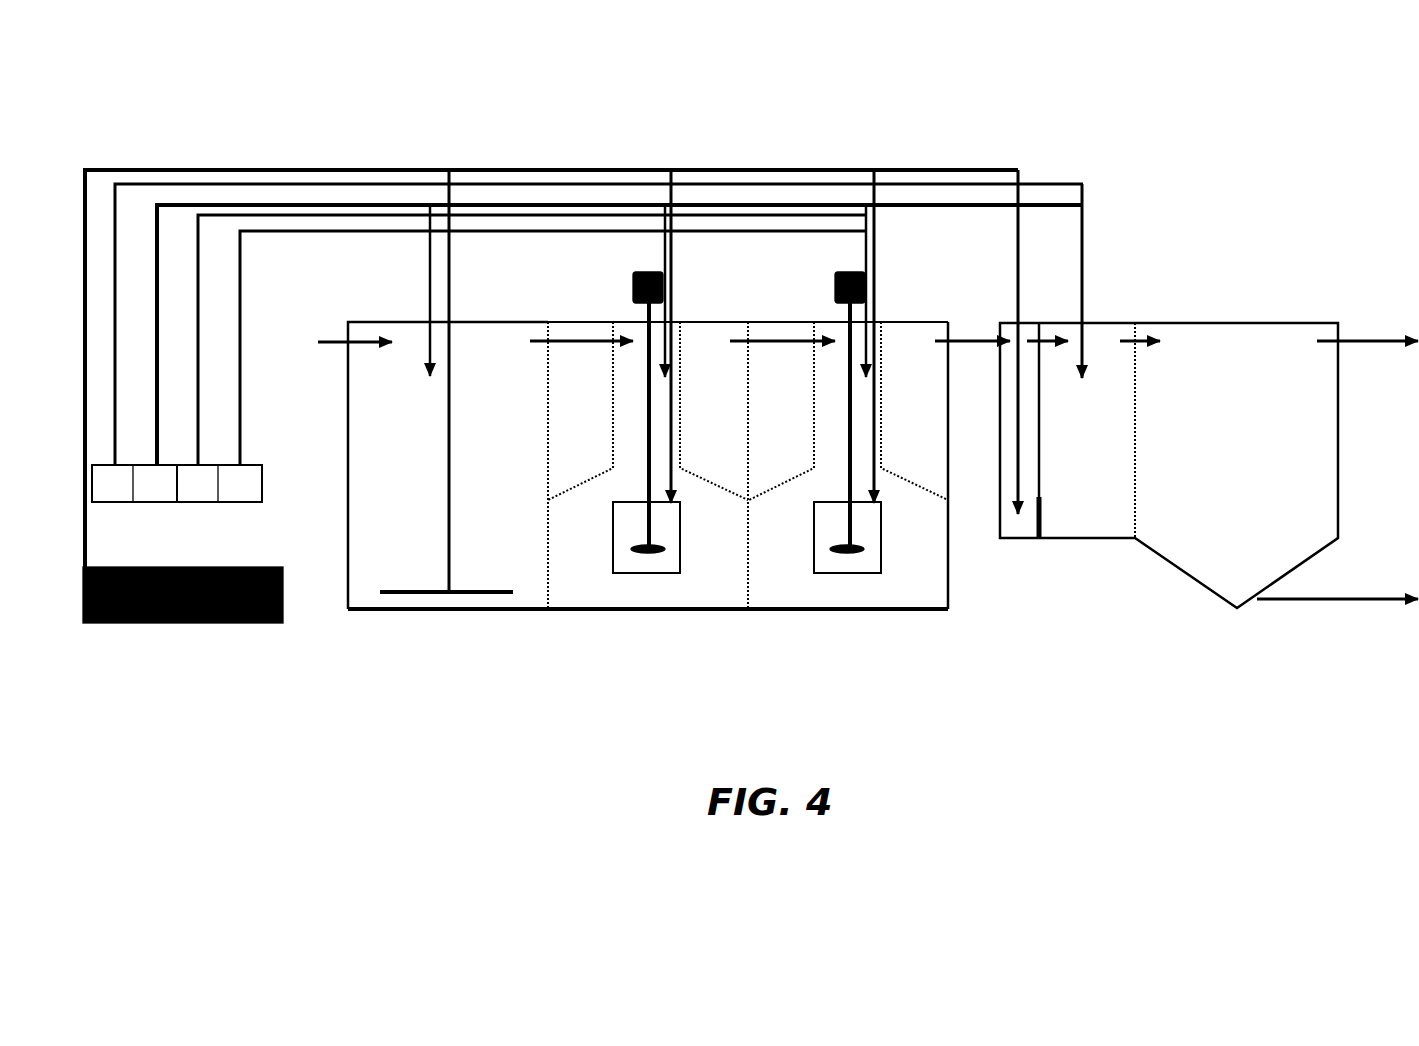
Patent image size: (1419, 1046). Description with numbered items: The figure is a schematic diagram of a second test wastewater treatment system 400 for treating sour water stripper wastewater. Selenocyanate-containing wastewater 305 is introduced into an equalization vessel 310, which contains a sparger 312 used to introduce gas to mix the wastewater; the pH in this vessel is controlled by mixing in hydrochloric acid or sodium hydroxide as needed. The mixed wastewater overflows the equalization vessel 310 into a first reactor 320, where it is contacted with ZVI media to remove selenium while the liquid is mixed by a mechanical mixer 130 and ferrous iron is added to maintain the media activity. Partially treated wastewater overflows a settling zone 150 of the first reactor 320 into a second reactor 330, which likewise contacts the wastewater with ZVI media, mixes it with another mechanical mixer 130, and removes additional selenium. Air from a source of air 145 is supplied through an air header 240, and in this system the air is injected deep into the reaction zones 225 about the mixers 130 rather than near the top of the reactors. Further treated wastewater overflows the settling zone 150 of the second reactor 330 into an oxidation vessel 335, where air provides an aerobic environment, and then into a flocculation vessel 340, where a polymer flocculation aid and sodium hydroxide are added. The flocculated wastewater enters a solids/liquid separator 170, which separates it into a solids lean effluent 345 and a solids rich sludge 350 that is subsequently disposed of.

The second test wastewater treatment system 400 is at (1202, 157).
The air header 240 is at (658, 168).
The source of air 145 is at (163, 623).
The sour water stripper wastewater 305 is at (332, 342).
The equalization vessel 310 is at (402, 600).
The sparger 312 is at (477, 590).
The first reactor 320 is at (648, 597).
The second reactor 330 is at (835, 595).
The settling zone 150 is at (748, 411).
The reaction zone 225 is at (633, 567).
The mechanical mixer 130 is at (665, 549).
The solids/liquid separator 170 is at (1169, 465).
The oxidation vessel 335 is at (1023, 528).
The flocculation vessel 340 is at (1082, 528).
The solids lean effluent 345 is at (1367, 327).
The solids rich sludge 350 is at (1337, 586).